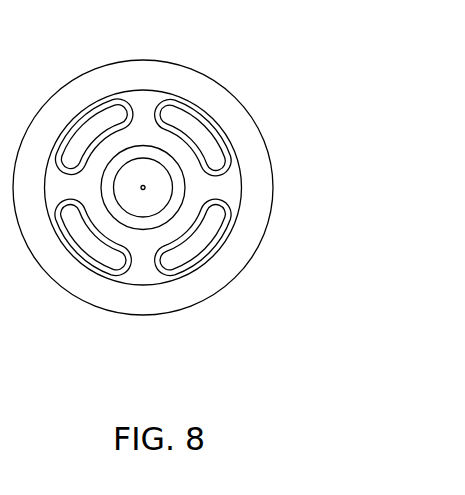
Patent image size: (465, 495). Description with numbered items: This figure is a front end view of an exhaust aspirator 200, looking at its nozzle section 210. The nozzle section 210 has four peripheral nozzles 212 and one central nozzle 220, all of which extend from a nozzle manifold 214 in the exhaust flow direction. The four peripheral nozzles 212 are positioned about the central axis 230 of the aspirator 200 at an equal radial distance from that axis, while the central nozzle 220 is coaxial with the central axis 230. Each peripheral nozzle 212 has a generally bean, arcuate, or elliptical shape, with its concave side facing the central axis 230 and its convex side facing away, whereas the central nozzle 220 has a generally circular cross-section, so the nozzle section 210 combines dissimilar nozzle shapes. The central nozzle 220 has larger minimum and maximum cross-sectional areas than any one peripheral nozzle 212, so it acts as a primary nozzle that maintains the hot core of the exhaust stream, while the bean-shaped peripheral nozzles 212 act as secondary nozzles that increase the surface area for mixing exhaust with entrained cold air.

The exhaust aspirator 200 is at (116, 50).
The nozzle section 210 is at (165, 85).
The peripheral nozzles 212 is at (79, 145).
The nozzle manifold 214 is at (222, 183).
The central nozzle 220 is at (137, 216).
The central axis 230 is at (143, 188).